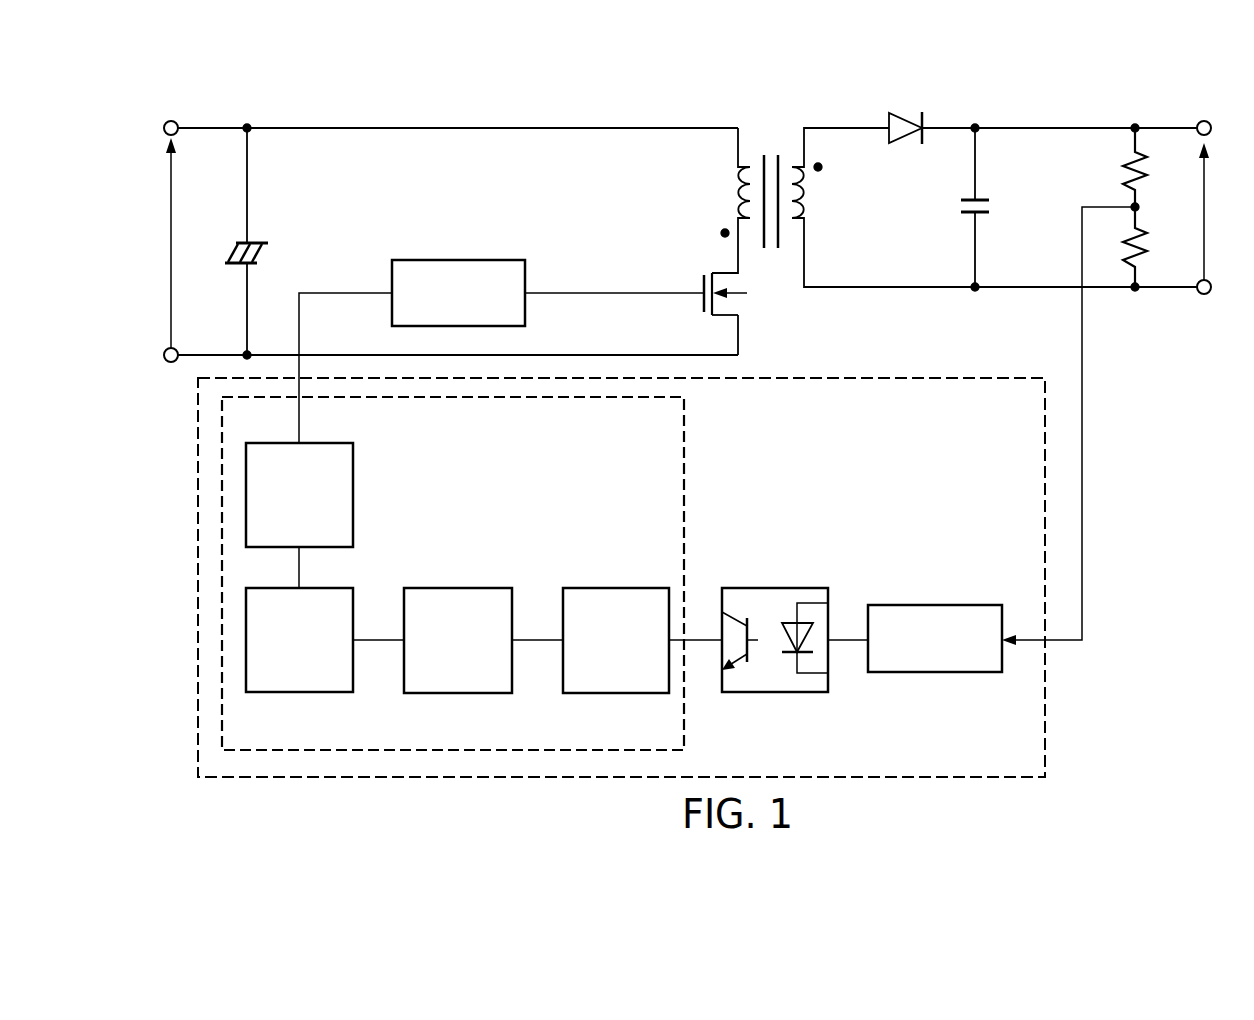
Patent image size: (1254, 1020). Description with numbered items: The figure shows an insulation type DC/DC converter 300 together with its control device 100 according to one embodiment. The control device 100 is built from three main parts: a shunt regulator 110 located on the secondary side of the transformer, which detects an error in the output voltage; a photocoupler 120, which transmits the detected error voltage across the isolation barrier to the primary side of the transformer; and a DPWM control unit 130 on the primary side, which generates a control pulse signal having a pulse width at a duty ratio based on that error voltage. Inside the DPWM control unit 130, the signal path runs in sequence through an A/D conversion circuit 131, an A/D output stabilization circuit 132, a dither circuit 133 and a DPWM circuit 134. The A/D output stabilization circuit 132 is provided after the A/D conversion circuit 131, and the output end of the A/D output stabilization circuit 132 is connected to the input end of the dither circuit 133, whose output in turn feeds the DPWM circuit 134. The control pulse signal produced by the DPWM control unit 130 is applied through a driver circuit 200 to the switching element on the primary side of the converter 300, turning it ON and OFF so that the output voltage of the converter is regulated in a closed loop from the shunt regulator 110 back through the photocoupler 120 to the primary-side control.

The insulation type DC/DC converter 300 is at (802, 80).
The driver circuit 200 is at (440, 259).
The control device 100 is at (862, 376).
The DPWM control unit 130 is at (689, 443).
The DPWM circuit 134 is at (318, 443).
The dither circuit 133 is at (318, 588).
The A/D output stabilization circuit 132 is at (450, 588).
The A/D conversion circuit 131 is at (603, 588).
The photocoupler 120 is at (760, 588).
The shunt regulator 110 is at (927, 605).